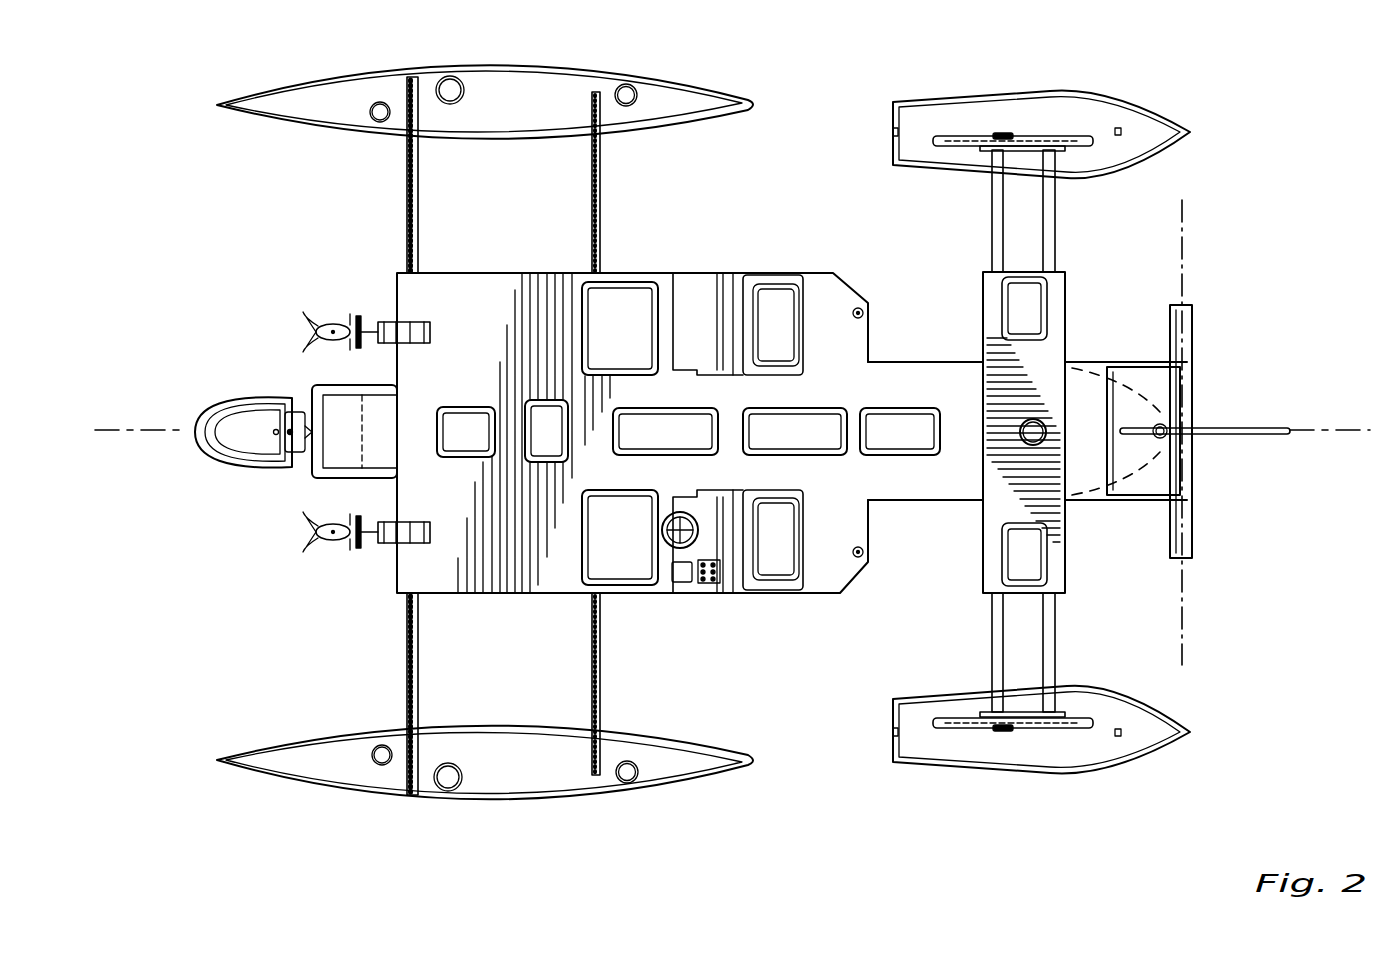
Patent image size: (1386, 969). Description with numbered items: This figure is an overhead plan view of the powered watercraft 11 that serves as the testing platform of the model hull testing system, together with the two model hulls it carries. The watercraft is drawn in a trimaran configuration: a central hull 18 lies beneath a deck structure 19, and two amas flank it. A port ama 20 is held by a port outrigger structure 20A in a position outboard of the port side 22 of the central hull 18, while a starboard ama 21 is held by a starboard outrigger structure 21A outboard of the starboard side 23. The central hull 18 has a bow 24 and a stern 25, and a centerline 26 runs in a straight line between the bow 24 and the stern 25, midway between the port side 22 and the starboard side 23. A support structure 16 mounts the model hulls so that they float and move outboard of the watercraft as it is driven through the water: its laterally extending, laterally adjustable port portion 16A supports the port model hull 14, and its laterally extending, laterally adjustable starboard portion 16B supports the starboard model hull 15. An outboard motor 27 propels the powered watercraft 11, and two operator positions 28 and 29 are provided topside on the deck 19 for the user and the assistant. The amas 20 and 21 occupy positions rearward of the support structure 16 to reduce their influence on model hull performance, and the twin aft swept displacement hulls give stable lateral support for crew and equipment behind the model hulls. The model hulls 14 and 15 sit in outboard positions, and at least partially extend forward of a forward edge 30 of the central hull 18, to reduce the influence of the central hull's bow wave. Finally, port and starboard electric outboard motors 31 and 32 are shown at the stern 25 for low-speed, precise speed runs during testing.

The powered watercraft 11 is at (1258, 176).
The port model hull 14 is at (986, 94).
The starboard model hull 15 is at (988, 768).
The support structure 16 is at (1055, 300).
The port portion of support structure 16A is at (1047, 228).
The starboard portion of support structure 16B is at (1047, 657).
The central hull 18 is at (1160, 408).
The deck structure 19 is at (826, 584).
The port ama 20 is at (333, 92).
The port outrigger structure 20A is at (594, 203).
The starboard ama 21 is at (340, 770).
The starboard outrigger structure 21A is at (594, 672).
The port side 22 is at (940, 360).
The starboard side 23 is at (940, 502).
The bow 24 is at (1188, 438).
The stern 25 is at (335, 445).
The centerline 26 is at (108, 428).
The outboard motor 27 is at (255, 405).
The operator position 28 is at (635, 570).
The operator position 29 is at (632, 298).
The forward edge 30 is at (1186, 640).
The port electric outboard motor 31 is at (330, 318).
The starboard electric outboard motor 32 is at (328, 552).